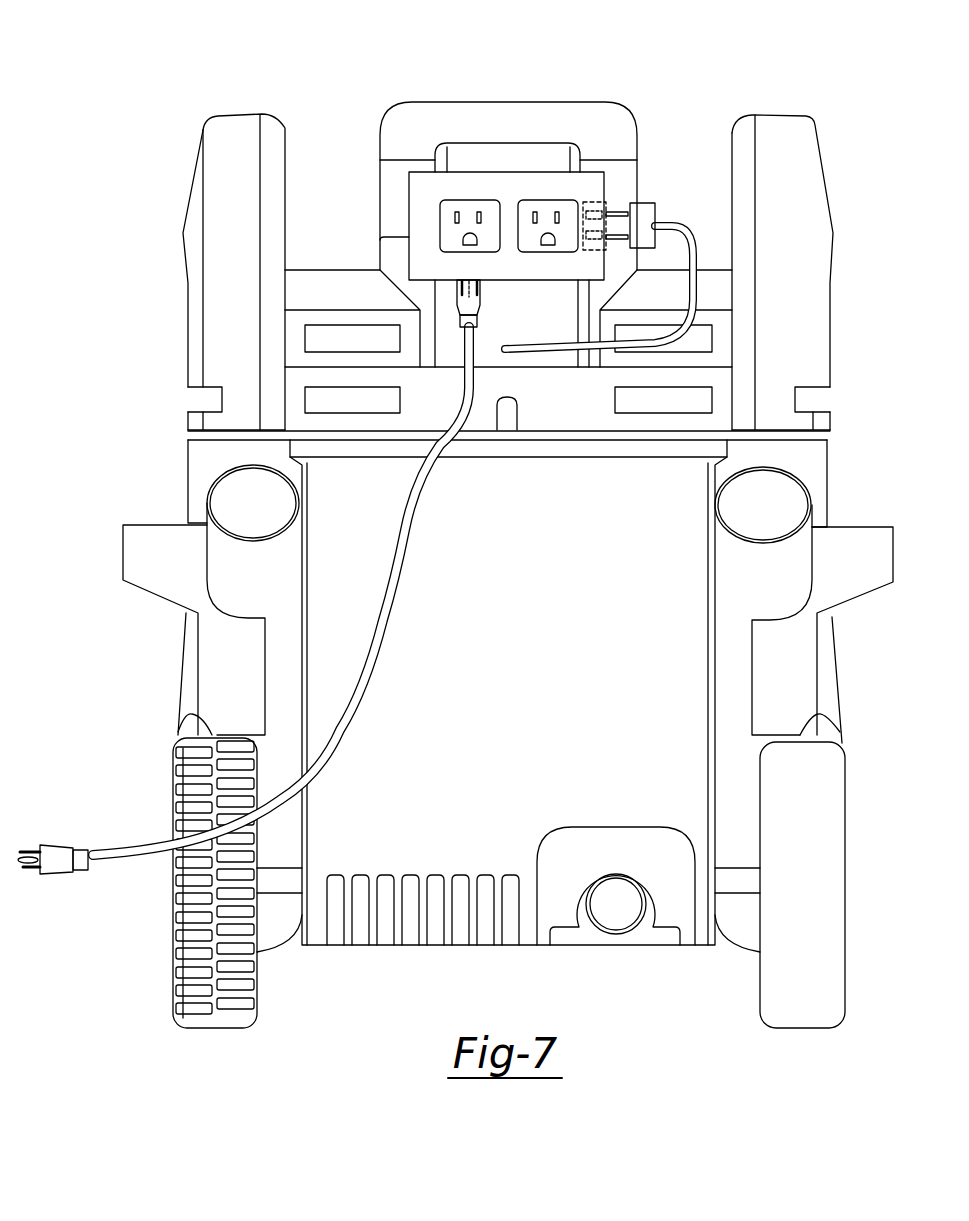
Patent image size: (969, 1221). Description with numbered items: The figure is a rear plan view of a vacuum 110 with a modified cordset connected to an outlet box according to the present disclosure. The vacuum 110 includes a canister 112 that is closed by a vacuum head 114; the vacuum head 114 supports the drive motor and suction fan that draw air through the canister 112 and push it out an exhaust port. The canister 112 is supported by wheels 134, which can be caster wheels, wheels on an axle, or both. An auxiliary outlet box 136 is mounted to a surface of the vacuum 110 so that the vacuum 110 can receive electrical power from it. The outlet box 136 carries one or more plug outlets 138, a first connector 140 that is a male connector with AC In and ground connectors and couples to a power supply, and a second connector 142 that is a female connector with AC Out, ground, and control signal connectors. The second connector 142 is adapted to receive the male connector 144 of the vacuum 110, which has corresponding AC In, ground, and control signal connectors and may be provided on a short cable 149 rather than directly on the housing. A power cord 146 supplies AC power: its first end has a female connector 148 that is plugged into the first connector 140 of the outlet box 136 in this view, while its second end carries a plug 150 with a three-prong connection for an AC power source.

The vacuum 110 is at (216, 62).
The canister 112 is at (687, 625).
The vacuum head 114 is at (713, 283).
The wheels 134 is at (183, 795).
The auxiliary outlet box 136 is at (430, 185).
The plug outlets 138 is at (547, 210).
The first connector 140 is at (492, 287).
The second connector 142 is at (590, 210).
The male connector 144 is at (644, 225).
The power cord 146 is at (381, 616).
The female connector 148 is at (482, 297).
The short cable 149 is at (688, 237).
The plug 150 is at (59, 852).